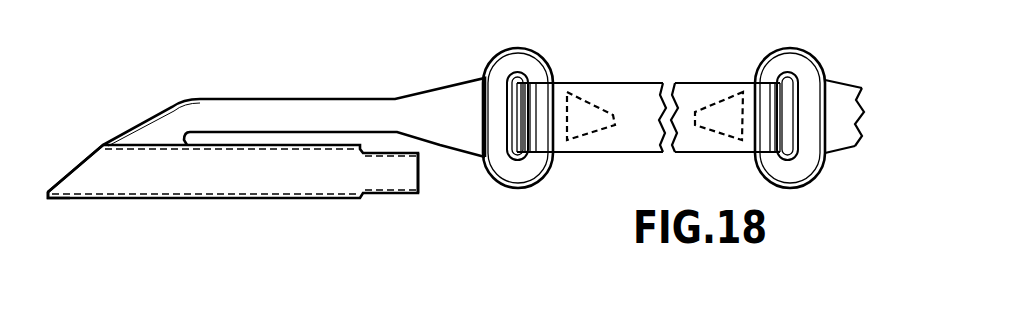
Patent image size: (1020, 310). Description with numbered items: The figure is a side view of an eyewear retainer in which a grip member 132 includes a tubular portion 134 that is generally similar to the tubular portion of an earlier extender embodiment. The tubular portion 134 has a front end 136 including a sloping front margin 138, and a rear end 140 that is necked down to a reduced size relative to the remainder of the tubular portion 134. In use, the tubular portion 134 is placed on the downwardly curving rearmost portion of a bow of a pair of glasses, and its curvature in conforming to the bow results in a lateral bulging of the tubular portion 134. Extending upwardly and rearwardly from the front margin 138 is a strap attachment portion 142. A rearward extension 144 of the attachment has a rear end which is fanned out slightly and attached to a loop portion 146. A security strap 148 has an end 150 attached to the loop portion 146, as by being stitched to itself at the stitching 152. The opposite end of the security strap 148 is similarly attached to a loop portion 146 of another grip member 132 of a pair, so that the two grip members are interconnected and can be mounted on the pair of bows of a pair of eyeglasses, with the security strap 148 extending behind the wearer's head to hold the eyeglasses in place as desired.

The grip member 132 is at (227, 208).
The tubular portion 134 is at (328, 198).
The front end 136 is at (48, 195).
The sloping front margin 138 is at (72, 168).
The rear end 140 is at (418, 173).
The strap attachment portion 142 is at (140, 125).
The rearward extension 144 is at (272, 100).
The loop portion 146 is at (515, 48).
The security strap 148 is at (633, 82).
The end of the security strap 150 is at (578, 82).
The stitching 152 is at (588, 140).